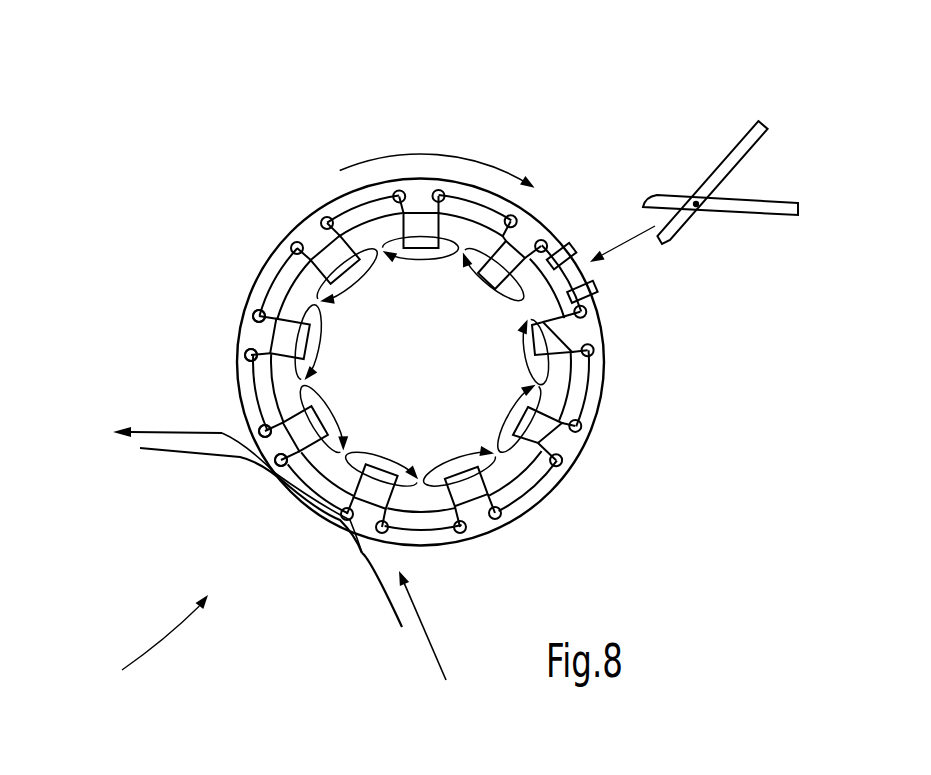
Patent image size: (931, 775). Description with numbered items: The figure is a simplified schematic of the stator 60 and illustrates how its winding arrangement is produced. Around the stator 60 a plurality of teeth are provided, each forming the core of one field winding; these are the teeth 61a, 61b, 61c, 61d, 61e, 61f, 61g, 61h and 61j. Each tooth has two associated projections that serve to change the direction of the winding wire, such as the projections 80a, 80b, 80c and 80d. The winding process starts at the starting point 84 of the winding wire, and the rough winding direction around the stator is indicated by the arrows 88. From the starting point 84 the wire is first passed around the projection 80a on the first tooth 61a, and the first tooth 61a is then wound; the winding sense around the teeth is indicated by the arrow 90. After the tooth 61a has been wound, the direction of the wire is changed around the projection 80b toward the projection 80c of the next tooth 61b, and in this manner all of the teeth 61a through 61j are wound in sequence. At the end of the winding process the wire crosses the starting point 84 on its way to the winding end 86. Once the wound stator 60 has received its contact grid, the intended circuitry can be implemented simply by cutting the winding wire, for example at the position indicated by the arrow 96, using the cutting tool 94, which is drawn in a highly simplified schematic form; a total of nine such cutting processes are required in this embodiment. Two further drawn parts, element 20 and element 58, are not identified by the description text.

The housing / guide vane carrier ring 20 is at (593, 282).
The adjusting ring stop 58 is at (585, 236).
The stator 60 is at (122, 670).
The first tooth 61a is at (278, 443).
The next tooth 61b is at (275, 342).
The tooth 61c is at (318, 250).
The tooth 61d is at (417, 213).
The tooth 61e is at (515, 247).
The tooth 61f is at (567, 333).
The tooth 61g is at (548, 433).
The tooth 61h is at (472, 500).
The tooth 61j is at (370, 510).
The projection 80a is at (280, 466).
The projection 80b is at (260, 430).
The projection 80c is at (246, 355).
The projection 80d is at (255, 314).
The starting point 84 is at (385, 582).
The winding end 86 is at (176, 452).
The arrows 88 is at (398, 152).
The arrow 90 is at (220, 515).
The cutting tool 94 is at (717, 170).
The arrow 96 is at (637, 226).